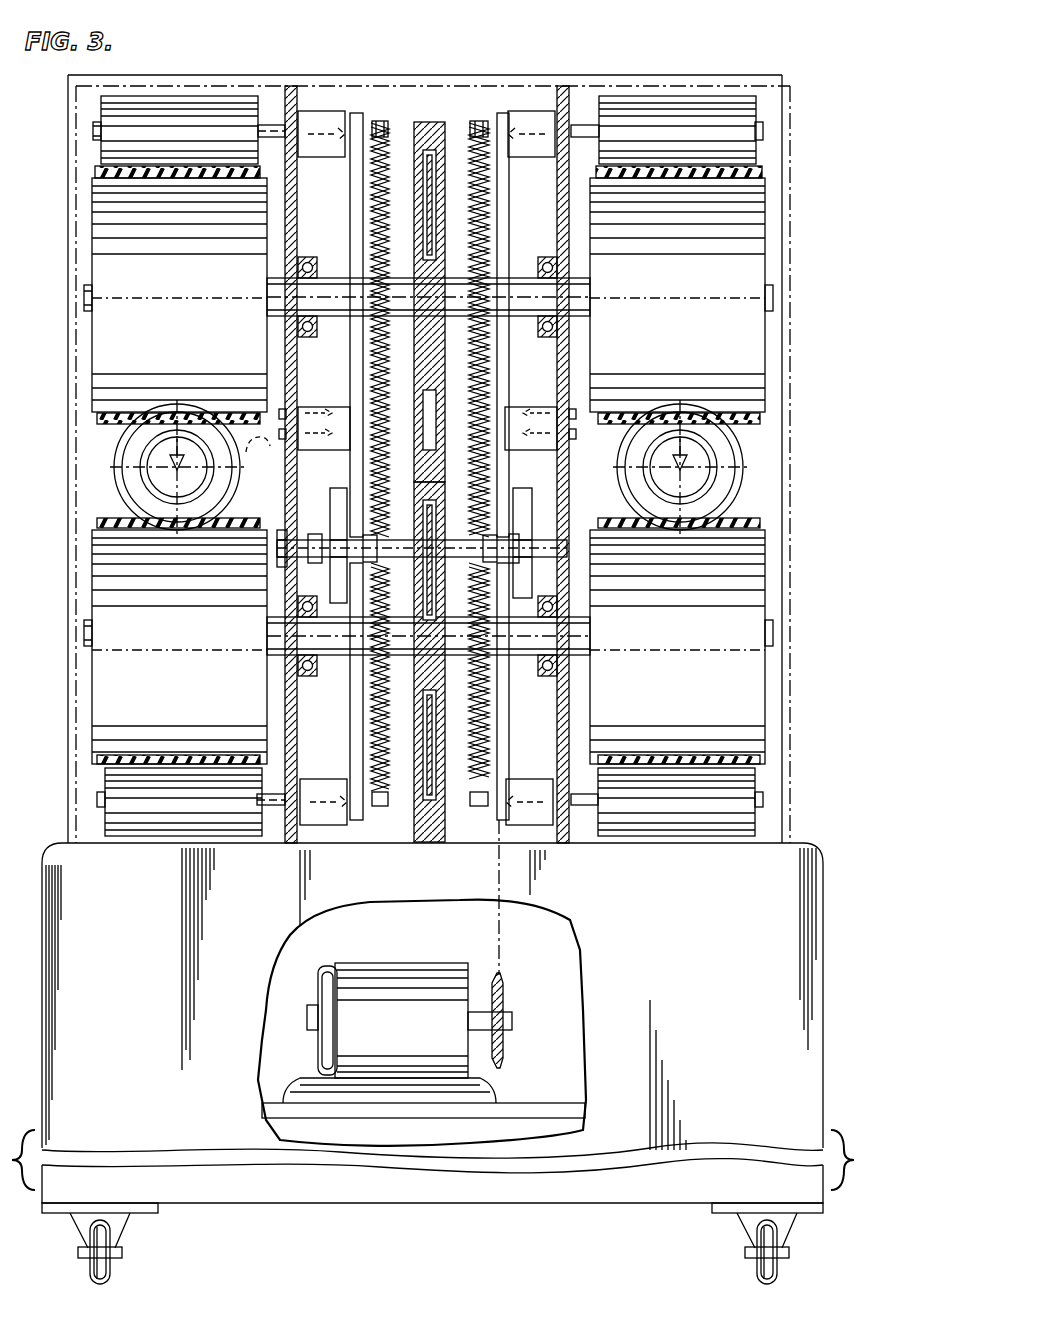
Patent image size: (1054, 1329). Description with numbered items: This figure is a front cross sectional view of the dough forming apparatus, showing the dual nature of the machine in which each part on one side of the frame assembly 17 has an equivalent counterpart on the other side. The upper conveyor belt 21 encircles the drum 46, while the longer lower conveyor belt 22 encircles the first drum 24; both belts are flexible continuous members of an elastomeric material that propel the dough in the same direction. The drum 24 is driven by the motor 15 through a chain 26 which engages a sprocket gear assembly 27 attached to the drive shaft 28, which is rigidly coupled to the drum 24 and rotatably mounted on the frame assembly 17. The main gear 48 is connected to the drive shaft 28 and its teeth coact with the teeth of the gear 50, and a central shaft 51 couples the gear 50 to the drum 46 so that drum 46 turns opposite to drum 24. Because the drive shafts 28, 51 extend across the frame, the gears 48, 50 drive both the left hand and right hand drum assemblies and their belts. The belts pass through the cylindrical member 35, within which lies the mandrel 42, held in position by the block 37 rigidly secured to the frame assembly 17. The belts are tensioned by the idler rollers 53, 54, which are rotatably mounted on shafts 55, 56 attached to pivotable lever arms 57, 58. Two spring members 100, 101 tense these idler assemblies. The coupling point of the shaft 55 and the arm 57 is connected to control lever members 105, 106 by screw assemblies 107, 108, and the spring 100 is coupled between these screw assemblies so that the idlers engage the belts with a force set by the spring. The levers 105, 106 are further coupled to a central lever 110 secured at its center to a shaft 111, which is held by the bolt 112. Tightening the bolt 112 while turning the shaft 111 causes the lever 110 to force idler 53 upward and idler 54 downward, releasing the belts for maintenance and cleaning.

The motor 15 is at (430, 965).
The frame assembly 17 is at (796, 362).
The upper conveyor belt 21 is at (100, 172).
The lower conveyor belt 22 is at (100, 524).
The first drum 24 is at (116, 668).
The chain 26 is at (503, 923).
The sprocket gear assembly 27 is at (500, 697).
The drive shaft 28 is at (85, 631).
The cylindrical member 35 is at (118, 492).
The block 37 is at (263, 460).
The mandrel 42 is at (150, 465).
The drum 46 is at (106, 222).
The main gear 48 is at (432, 842).
The gear 50 is at (432, 130).
The central shaft 51 is at (85, 298).
The idler roller 53 is at (108, 108).
The idler roller 54 is at (120, 815).
The shaft 55 is at (93, 132).
The shaft 56 is at (97, 800).
The pivotable lever arm 57 is at (318, 111).
The pivotable lever arm 58 is at (318, 779).
The spring member 100 is at (381, 152).
The spring member 101 is at (474, 150).
The control lever member 105 is at (356, 113).
The control lever member 106 is at (356, 820).
The screw assembly 107 is at (384, 121).
The screw assembly 108 is at (382, 806).
The central lever 110 is at (342, 488).
The shaft 111 is at (322, 540).
The bolt 112 is at (280, 530).